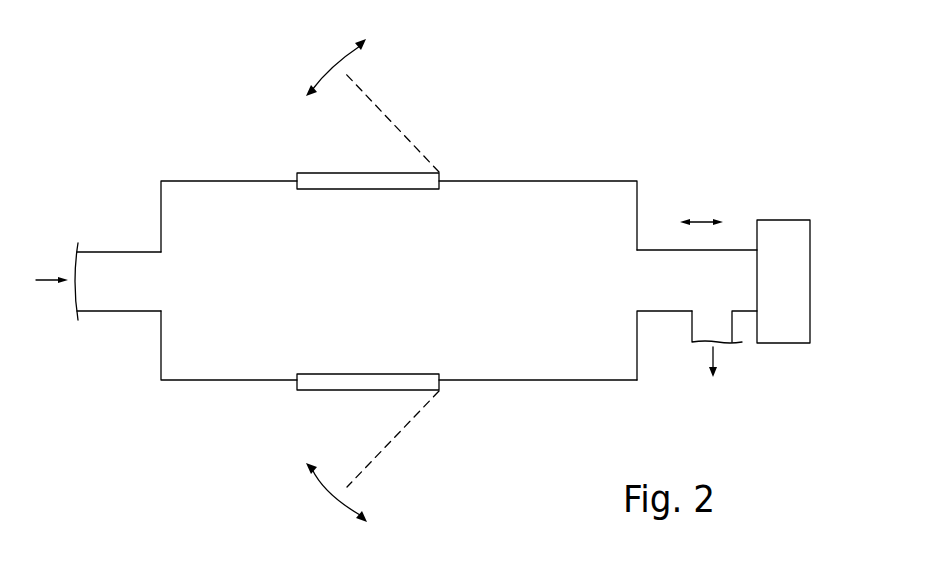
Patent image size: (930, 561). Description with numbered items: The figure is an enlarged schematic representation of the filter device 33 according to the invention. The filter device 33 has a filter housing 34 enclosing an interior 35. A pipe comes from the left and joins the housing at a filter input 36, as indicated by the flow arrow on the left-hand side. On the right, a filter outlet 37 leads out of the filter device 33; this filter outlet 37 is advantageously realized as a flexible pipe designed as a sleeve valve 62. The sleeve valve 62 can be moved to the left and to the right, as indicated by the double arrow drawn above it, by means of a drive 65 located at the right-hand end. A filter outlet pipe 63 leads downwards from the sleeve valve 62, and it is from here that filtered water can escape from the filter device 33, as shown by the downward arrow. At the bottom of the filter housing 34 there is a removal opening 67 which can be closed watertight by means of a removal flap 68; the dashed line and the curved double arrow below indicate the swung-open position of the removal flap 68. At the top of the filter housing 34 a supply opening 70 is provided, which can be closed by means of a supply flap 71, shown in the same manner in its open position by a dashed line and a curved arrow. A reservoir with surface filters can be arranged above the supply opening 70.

The filter device 33 is at (187, 106).
The filter housing 34 is at (177, 181).
The interior 35 is at (484, 198).
The filter input 36 is at (160, 312).
The filter outlet 37 is at (638, 250).
The sleeve valve 62 is at (656, 312).
The filter outlet pipe 63 is at (692, 322).
The drive 65 is at (782, 220).
The removal opening 67 is at (332, 383).
The removal flap 68 is at (377, 455).
The supply opening 70 is at (311, 180).
The supply flap 71 is at (370, 98).